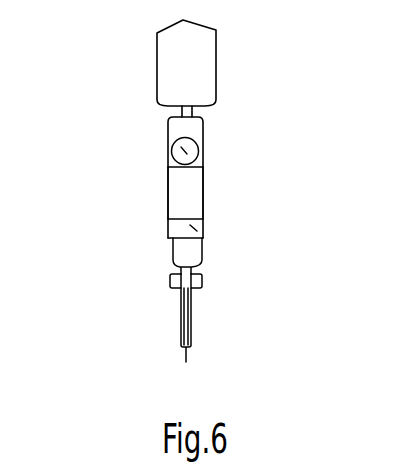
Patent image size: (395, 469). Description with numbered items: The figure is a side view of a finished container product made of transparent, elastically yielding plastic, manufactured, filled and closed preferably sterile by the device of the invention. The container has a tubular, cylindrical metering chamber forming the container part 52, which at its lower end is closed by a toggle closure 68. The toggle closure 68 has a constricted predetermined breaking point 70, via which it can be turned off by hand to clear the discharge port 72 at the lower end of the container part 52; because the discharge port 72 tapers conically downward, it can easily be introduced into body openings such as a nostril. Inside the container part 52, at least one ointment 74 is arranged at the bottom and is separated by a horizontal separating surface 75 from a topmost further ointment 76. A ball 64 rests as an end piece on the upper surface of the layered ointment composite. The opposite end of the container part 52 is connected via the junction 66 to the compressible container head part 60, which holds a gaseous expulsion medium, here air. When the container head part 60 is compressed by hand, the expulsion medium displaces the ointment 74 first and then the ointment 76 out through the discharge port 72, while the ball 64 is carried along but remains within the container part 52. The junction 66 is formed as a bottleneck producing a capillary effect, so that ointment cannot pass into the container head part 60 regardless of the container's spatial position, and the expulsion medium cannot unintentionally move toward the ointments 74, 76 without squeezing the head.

The container head part 60 is at (213, 78).
The junction 66 is at (192, 112).
The ball 64 is at (172, 143).
The container part 52 is at (203, 151).
The horizontal separating surface 75 is at (177, 214).
The further ointment 76 is at (196, 197).
The ointment 74 is at (205, 231).
The predetermined breaking point 70 is at (203, 263).
The discharge port 72 is at (173, 267).
The toggle closure 68 is at (191, 328).